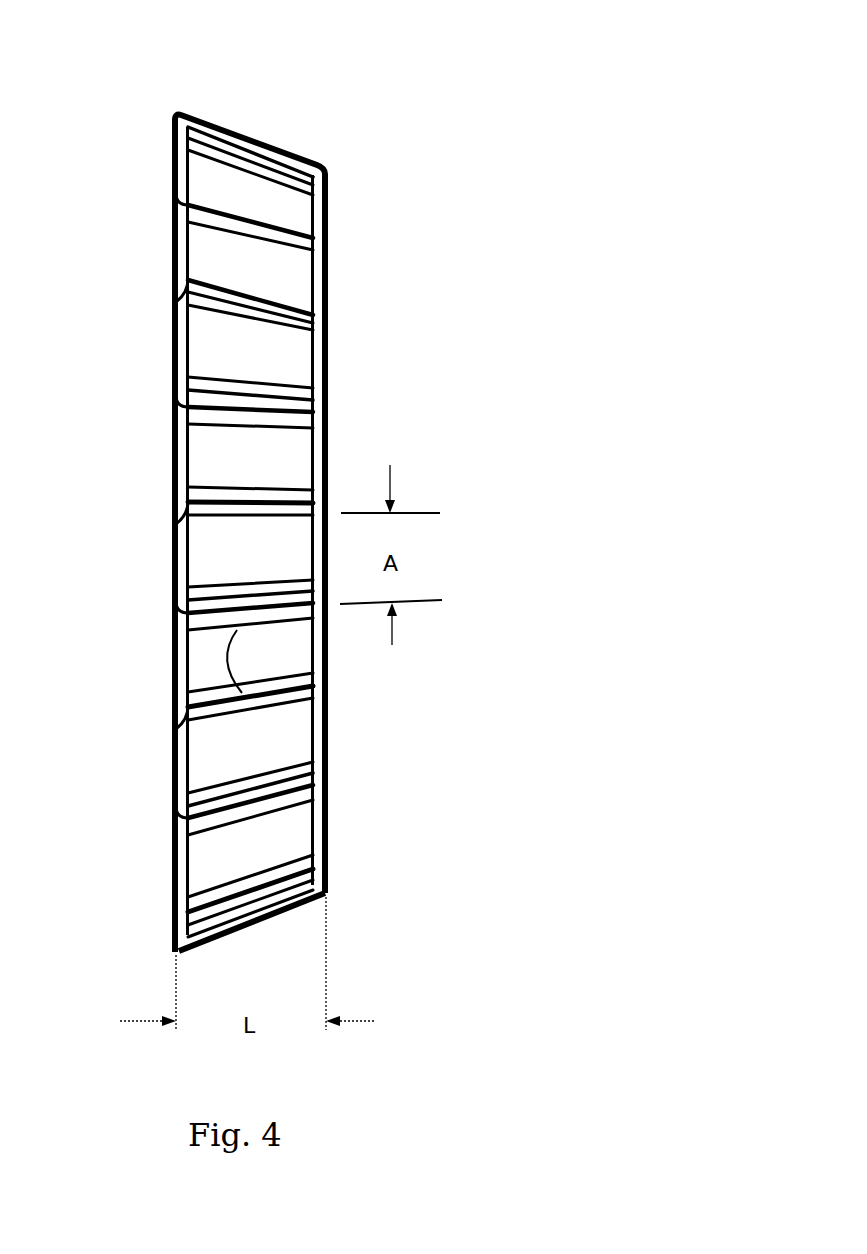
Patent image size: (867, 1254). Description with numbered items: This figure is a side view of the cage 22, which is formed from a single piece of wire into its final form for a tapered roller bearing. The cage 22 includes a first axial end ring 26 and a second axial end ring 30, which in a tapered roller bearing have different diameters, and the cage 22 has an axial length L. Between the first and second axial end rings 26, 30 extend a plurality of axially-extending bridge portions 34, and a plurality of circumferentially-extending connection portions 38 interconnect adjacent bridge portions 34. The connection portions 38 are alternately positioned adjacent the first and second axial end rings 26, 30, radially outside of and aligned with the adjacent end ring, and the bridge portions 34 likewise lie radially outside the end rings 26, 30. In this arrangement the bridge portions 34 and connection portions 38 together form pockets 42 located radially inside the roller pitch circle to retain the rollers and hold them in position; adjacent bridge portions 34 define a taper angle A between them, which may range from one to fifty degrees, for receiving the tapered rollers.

The cage 22 is at (428, 114).
The first axial end ring 26 is at (175, 353).
The second axial end ring 30 is at (326, 440).
The bridge portion 34 is at (237, 630).
The connection portion 38 is at (182, 256).
The pocket 42 is at (280, 758).